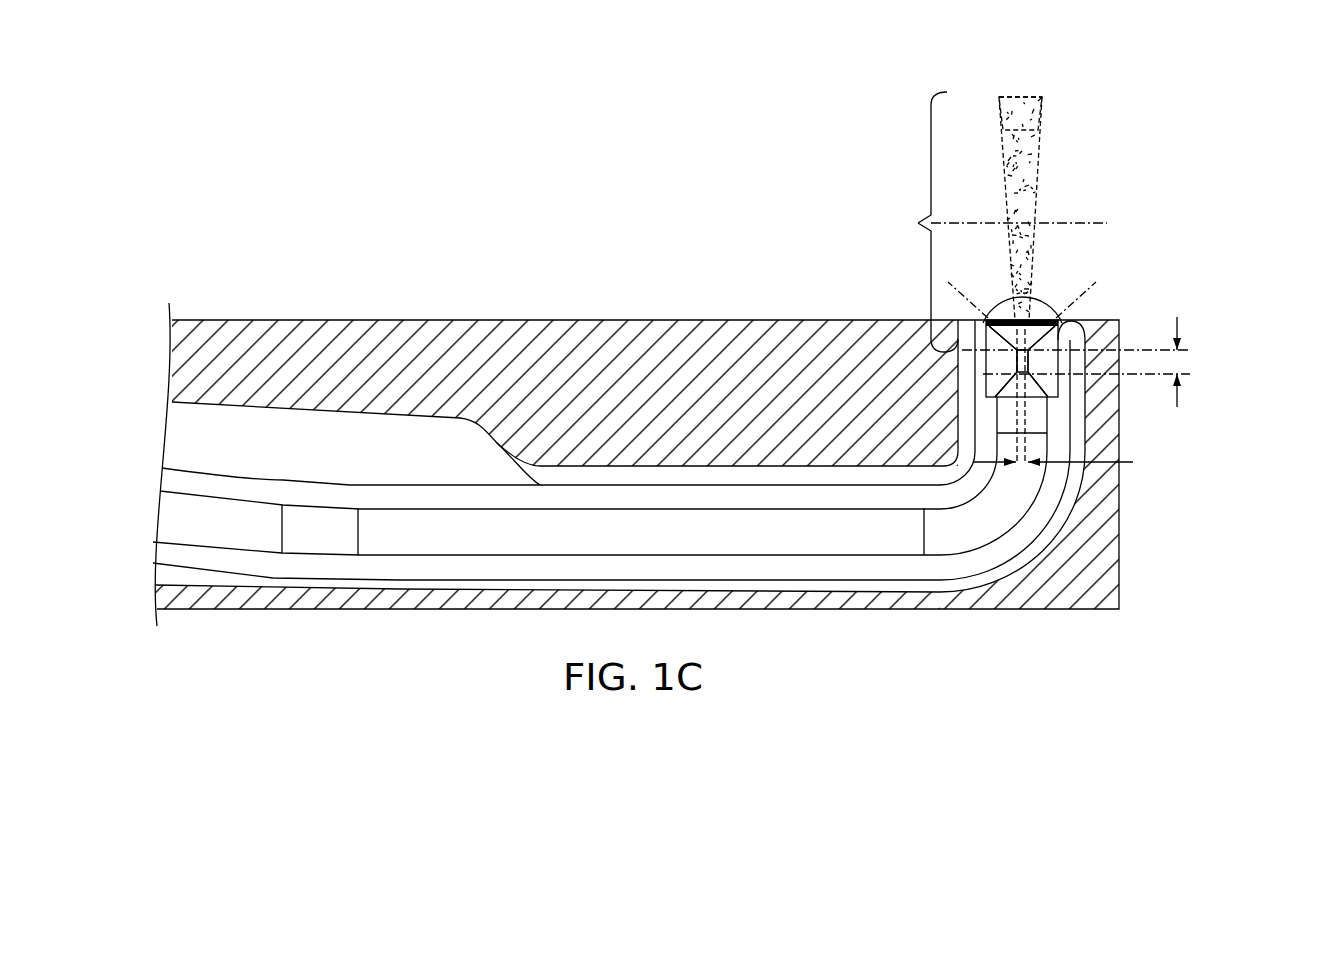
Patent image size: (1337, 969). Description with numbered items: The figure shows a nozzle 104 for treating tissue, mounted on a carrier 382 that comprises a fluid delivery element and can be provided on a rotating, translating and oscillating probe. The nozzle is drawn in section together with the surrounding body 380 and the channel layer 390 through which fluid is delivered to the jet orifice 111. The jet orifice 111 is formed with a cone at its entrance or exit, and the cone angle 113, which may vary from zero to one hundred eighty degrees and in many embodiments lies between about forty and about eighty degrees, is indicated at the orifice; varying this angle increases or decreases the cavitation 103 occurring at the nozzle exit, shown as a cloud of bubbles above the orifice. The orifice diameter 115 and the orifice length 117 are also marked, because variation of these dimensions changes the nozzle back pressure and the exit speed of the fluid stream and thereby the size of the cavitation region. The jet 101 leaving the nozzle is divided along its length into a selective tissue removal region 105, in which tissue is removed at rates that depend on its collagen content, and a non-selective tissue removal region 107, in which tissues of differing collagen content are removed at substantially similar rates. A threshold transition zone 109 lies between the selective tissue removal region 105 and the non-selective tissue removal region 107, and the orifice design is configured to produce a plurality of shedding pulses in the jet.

The jet 101 is at (1025, 187).
The cavitation 103 is at (1033, 120).
The nozzle 104 is at (1027, 378).
The selective tissue removal region 105 is at (918, 140).
The non-selective tissue removal region 107 is at (918, 280).
The threshold transition zone 109 is at (950, 223).
The jet orifice 111 is at (1000, 352).
The cone angle 113 is at (1050, 297).
The orifice diameter 115 is at (1105, 462).
The orifice length 117 is at (1200, 360).
The housing 380 is at (1098, 574).
The carrier 382 is at (867, 609).
The channel layer 390 is at (658, 485).